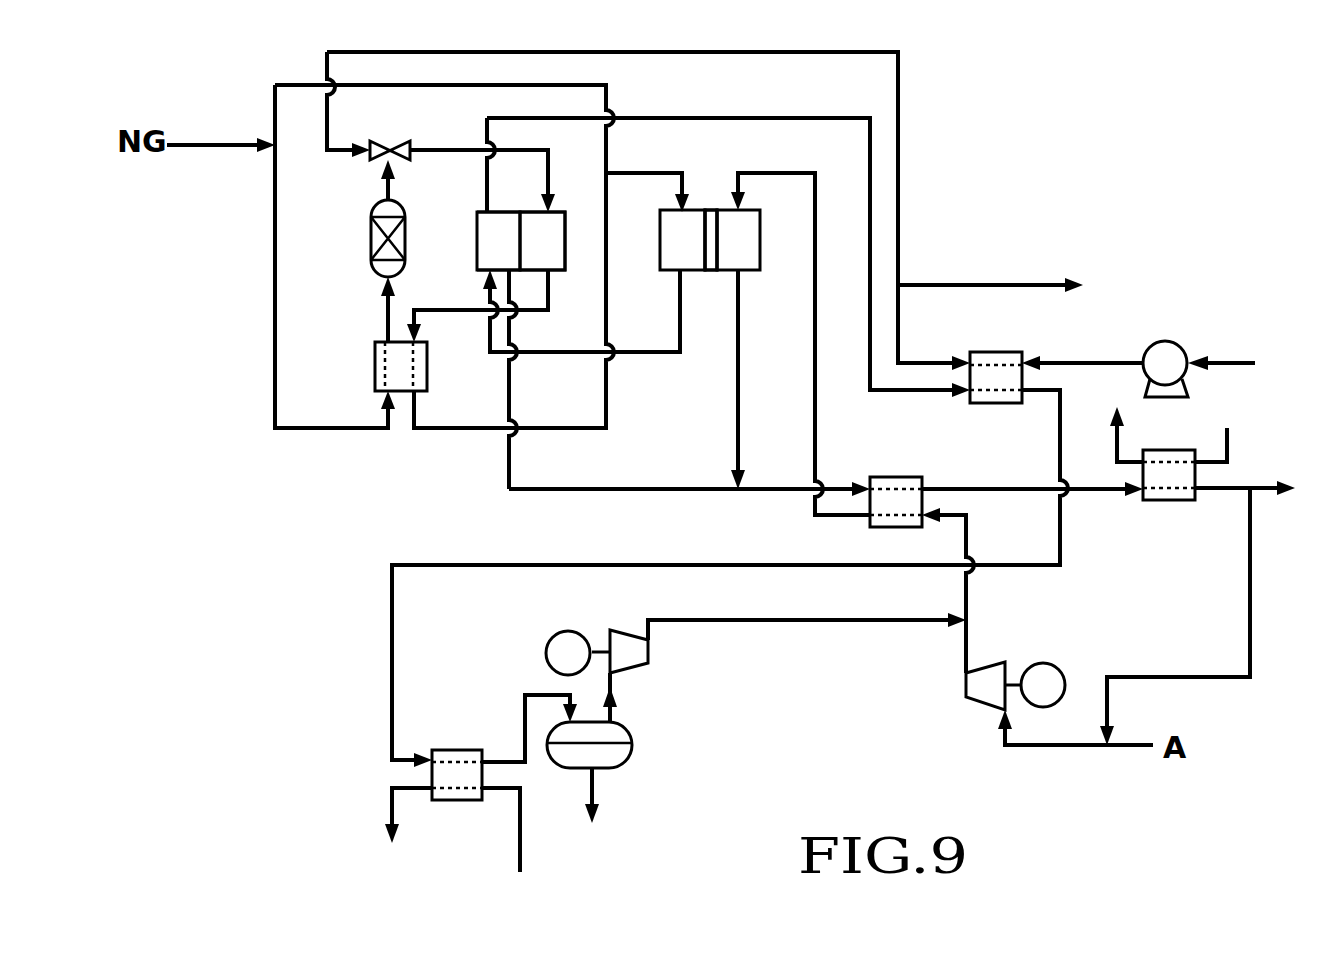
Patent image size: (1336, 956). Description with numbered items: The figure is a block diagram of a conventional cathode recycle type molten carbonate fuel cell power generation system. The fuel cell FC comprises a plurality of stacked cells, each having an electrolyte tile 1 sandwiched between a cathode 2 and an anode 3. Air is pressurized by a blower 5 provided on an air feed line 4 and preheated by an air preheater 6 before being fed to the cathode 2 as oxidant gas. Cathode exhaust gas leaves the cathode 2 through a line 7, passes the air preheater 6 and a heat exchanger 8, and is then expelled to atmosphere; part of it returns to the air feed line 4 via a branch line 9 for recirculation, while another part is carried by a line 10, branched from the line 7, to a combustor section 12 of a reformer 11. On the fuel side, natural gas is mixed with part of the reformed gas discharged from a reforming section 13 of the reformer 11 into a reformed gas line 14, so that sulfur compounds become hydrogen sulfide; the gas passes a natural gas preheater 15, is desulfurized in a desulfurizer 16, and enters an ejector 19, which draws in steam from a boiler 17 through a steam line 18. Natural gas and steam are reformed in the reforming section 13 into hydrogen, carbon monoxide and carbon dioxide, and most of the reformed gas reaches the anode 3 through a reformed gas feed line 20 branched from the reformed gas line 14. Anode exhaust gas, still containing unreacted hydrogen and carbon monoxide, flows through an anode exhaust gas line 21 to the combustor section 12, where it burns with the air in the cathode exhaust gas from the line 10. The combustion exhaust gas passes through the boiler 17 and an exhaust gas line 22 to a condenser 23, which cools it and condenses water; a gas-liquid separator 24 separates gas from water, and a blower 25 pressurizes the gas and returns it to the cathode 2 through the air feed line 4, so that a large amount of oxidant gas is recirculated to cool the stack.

The electrolyte tile 1 is at (706, 272).
The cathode 2 is at (760, 253).
The anode 3 is at (668, 262).
The air feed line 4 is at (814, 450).
The blower 5 is at (983, 690).
The air preheater 6 is at (912, 450).
The line 7 is at (740, 397).
The heat exchanger 8 is at (1185, 500).
The branch line 9 is at (1250, 638).
The line 10 is at (647, 490).
The reformer 11 is at (475, 269).
The combustor section 12 is at (507, 222).
The reforming section 13 is at (560, 257).
The reformed gas line 14 is at (463, 313).
The natural gas preheater 15 is at (375, 385).
The desulfurizer 16 is at (371, 247).
The boiler 17 is at (982, 352).
The steam line 18 is at (743, 52).
The ejector 19 is at (434, 132).
The reformed gas feed line 20 is at (677, 143).
The anode exhaust gas line 21 is at (637, 357).
The exhaust gas line 22 is at (815, 117).
The condenser 23 is at (480, 715).
The gas-liquid separator 24 is at (620, 757).
The blower 25 is at (632, 662).
The fuel cell FC is at (710, 195).